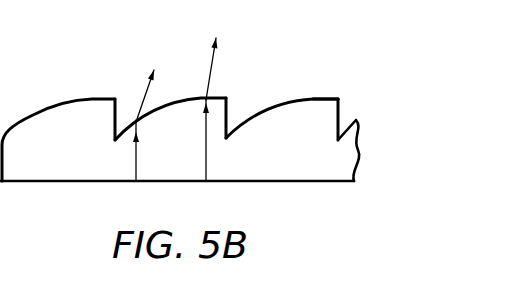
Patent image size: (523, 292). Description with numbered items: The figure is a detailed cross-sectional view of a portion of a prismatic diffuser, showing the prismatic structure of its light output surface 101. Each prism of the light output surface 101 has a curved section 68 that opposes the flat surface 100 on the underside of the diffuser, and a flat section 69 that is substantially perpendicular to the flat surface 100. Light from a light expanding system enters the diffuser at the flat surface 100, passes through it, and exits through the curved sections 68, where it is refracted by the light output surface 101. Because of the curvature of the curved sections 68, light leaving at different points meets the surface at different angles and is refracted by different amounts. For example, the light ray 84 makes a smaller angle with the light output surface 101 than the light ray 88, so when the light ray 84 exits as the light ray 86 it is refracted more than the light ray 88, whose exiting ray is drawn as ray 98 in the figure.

The flat surface 100 is at (308, 181).
The light output surface 101 is at (331, 97).
The curved section 68 is at (227, 98).
The flat section 69 is at (228, 108).
The light ray 84 is at (135, 167).
The light ray 86 is at (138, 119).
The light ray 88 is at (204, 162).
The refracted light ray 98 is at (206, 100).